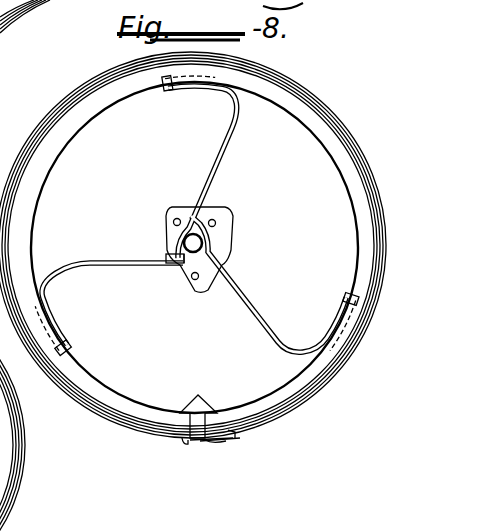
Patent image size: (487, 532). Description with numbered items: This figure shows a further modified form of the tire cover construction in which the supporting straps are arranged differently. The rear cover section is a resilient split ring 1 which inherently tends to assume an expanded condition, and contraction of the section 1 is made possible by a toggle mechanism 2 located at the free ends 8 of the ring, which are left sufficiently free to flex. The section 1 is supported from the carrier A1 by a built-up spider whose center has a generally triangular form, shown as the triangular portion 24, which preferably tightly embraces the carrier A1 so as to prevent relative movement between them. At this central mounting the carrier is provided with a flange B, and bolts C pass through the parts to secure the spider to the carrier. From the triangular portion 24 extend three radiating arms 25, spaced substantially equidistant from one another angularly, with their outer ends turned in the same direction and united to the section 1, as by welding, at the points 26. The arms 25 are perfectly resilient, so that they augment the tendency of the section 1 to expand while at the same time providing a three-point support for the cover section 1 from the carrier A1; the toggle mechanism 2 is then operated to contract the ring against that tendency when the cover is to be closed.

The ring 1 is at (59, 178).
The toggle mechanism 2 is at (232, 451).
The ends of the ring 8 is at (207, 408).
The triangular portion of spider 24 is at (181, 268).
The radiating arms 25 is at (222, 150).
The points of union of arms to section 26 is at (166, 78).
The carrier A1 is at (182, 248).
The flange B is at (218, 239).
The bolts C is at (177, 218).